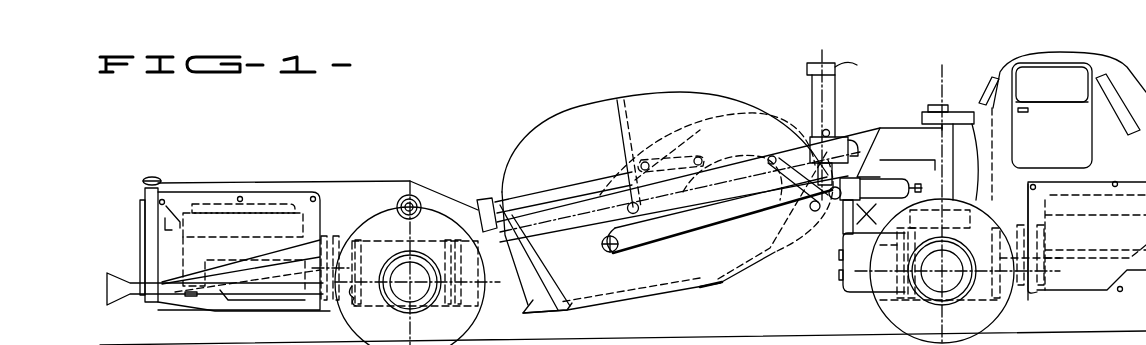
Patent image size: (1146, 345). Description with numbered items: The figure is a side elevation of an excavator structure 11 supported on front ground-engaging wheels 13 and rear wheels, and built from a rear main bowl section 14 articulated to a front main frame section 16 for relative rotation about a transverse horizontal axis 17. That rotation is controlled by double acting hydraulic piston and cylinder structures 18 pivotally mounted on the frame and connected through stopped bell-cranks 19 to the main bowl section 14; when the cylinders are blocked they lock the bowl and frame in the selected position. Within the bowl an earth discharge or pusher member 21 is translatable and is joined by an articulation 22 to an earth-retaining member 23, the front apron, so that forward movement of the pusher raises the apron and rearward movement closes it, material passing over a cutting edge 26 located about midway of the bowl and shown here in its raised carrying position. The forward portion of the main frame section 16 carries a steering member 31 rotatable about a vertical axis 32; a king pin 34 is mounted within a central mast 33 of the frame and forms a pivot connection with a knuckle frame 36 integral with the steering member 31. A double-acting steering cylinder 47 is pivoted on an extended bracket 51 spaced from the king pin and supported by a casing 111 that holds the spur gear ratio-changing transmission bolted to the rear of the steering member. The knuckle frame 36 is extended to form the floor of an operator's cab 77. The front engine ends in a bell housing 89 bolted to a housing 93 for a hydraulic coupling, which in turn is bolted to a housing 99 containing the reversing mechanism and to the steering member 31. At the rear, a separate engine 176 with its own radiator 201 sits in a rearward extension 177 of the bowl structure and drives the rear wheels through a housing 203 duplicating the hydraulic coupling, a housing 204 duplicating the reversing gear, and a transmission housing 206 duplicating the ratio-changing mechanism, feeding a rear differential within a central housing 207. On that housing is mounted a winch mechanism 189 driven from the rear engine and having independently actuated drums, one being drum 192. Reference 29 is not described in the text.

The excavator structure 11 is at (566, 116).
The front ground-engaging wheels 13 is at (886, 318).
The main bowl section 14 is at (611, 302).
The main frame section 16 is at (710, 226).
The transverse horizontal axis 17 is at (617, 250).
The double acting hydraulic piston and cylinder structures 18 is at (811, 96).
The bell-cranks 19 is at (828, 203).
The pusher member 21 is at (511, 188).
The articulation 22 is at (626, 211).
The earth-retaining member 23 is at (766, 259).
The cutting edge 26 is at (714, 284).
The link 29 is at (666, 163).
The steering member 31 is at (990, 300).
The vertical axis 32 is at (943, 78).
The central mast 33 is at (956, 187).
The king pin 34 is at (931, 108).
The knuckle frame 36 is at (968, 110).
The double-acting steering cylinder 47 is at (891, 178).
The bracket 51 is at (858, 220).
The operator's cab 77 is at (1105, 65).
The bell housing 89 is at (1045, 270).
The housing 93 is at (1027, 300).
The housing 99 is at (1015, 230).
The casing 111 is at (855, 292).
The engine 176 is at (285, 204).
The rearward extension 177 is at (222, 292).
The winch mechanism 189 is at (427, 203).
The drum 192 is at (412, 197).
The radiator 201 is at (143, 228).
The housing 203 is at (320, 301).
The housing 204 is at (362, 298).
The transmission housing 206 is at (503, 293).
The central housing 207 is at (437, 304).